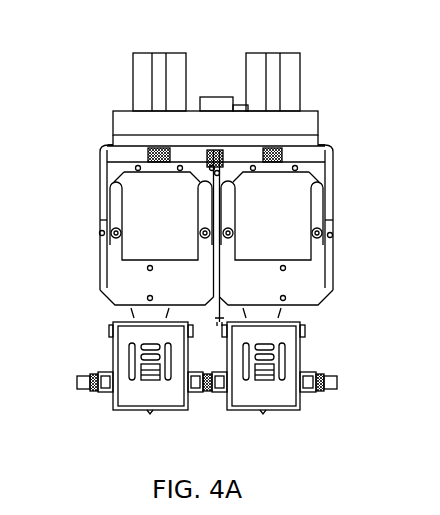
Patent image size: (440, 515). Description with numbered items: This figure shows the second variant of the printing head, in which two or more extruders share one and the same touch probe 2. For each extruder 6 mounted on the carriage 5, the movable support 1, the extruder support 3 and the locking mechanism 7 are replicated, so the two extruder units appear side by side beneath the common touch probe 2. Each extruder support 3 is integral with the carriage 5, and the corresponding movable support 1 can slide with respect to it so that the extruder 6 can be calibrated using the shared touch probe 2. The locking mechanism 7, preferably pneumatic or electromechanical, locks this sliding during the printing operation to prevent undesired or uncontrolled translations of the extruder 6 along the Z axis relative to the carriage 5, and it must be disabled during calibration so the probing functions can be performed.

The movable support 1 is at (121, 176).
The touch probe 2 is at (225, 97).
The extruder support 3 is at (140, 291).
The carriage 5 is at (225, 325).
The extruder 6 is at (112, 338).
The locking mechanism 7 is at (131, 93).